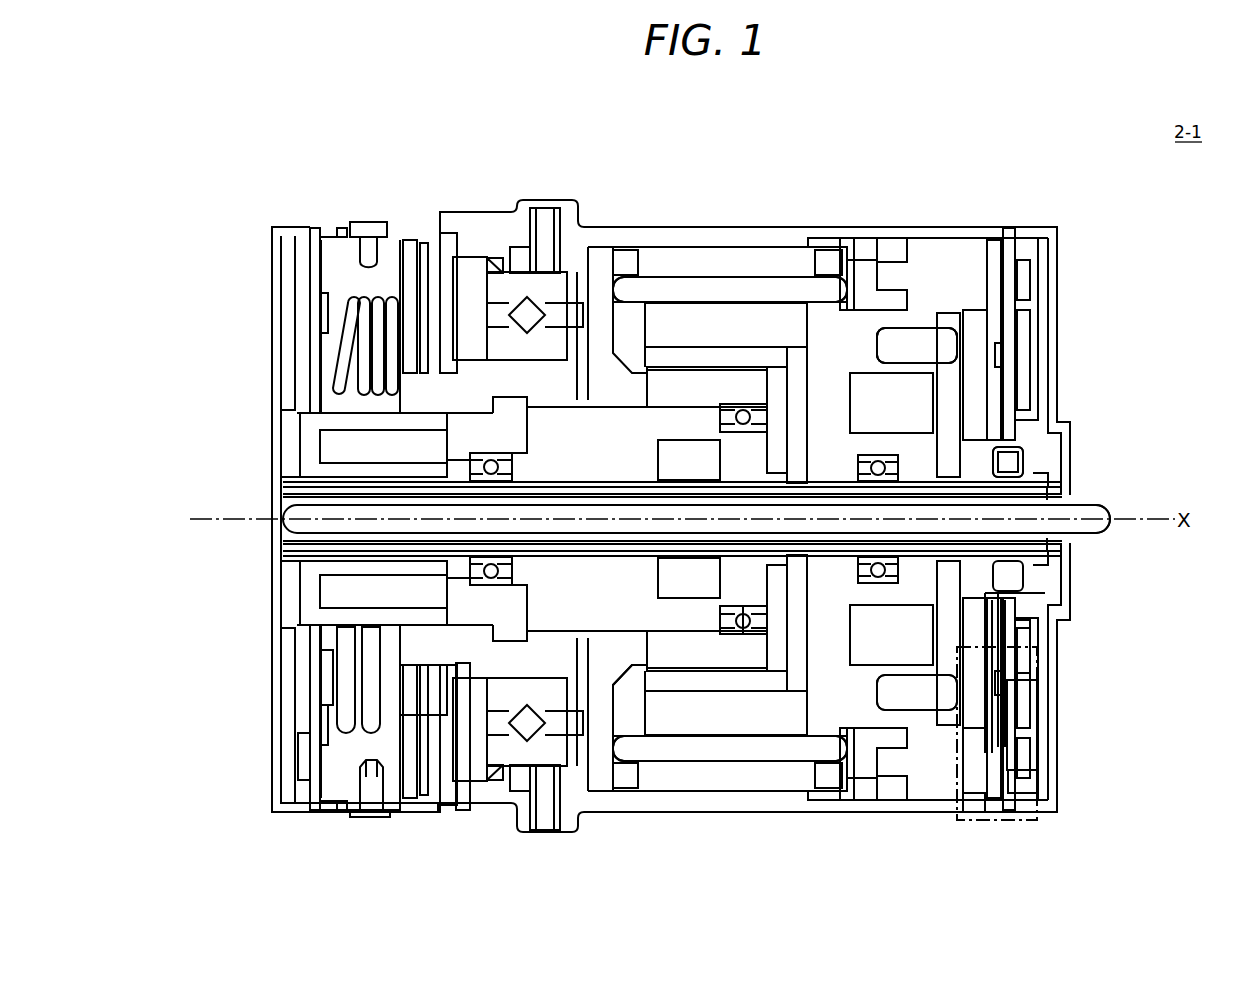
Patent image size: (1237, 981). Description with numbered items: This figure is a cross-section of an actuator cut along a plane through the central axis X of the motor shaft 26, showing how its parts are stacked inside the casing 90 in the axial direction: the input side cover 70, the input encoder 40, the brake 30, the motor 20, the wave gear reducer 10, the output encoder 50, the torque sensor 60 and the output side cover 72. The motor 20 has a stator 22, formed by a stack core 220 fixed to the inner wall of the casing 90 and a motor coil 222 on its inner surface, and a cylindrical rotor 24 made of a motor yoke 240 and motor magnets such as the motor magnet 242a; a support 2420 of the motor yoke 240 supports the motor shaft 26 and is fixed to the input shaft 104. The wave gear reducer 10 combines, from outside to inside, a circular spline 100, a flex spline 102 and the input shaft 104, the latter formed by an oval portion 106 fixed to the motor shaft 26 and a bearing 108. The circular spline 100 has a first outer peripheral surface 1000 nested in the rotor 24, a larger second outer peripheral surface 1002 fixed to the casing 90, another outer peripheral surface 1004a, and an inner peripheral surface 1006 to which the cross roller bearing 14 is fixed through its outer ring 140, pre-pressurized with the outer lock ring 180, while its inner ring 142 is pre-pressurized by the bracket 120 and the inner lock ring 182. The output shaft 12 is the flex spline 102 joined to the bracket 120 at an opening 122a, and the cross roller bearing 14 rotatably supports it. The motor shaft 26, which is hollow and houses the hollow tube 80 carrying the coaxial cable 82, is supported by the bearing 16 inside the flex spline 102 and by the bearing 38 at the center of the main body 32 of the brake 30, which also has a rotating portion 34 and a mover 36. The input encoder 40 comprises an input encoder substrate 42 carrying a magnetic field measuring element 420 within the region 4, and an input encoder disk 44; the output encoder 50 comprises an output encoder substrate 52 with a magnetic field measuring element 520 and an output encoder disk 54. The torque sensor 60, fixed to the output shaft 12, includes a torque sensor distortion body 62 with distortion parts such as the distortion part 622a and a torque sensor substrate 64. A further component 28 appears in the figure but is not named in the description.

The region 4 is at (1043, 727).
The wave gear reducer 10 is at (596, 236).
The output shaft 12 is at (387, 425).
The cross roller bearing 14 is at (497, 258).
The bearing 16 is at (305, 578).
The motor 20 is at (830, 146).
The stator 22 is at (772, 233).
The rotor 24 is at (793, 291).
The motor shaft 26 is at (1012, 470).
The rotor holder 28 is at (892, 778).
The brake 30 is at (845, 146).
The main body 32 is at (864, 298).
The rotating portion 34 is at (977, 295).
The mover 36 is at (945, 296).
The bearing 38 is at (965, 578).
The input encoder 40 is at (985, 158).
The input encoder substrate 42 is at (1018, 259).
The input encoder disk 44 is at (999, 259).
The output encoder 50 is at (477, 140).
The output encoder substrate 52 is at (408, 238).
The output encoder disk 54 is at (450, 230).
The torque sensor 60 is at (282, 148).
The torque sensor distortion body 62 is at (335, 218).
The torque sensor substrate 64 is at (314, 216).
The input side cover 70 is at (1074, 231).
The output side cover 72 is at (277, 214).
The hollow tube 80 is at (1040, 505).
The coaxial cable 82 is at (1100, 531).
The casing 90 is at (644, 242).
The circular spline 100 is at (738, 285).
The flex spline 102 is at (607, 760).
The input shaft 104 is at (760, 890).
The oval portion 106 is at (722, 650).
The bearing 108 is at (762, 680).
The bracket 120 is at (440, 386).
The opening 122a is at (420, 398).
The outer ring 140 is at (497, 288).
The inner ring 142 is at (497, 345).
The outer lock ring 180 is at (468, 775).
The inner lock ring 182 is at (405, 690).
The stack core 220 is at (690, 262).
The motor coil 222 is at (726, 262).
The motor yoke 240 is at (833, 700).
The motor magnet 242a is at (800, 770).
The magnetic field measuring element 420 is at (1027, 706).
The magnetic field measuring element 520 is at (395, 742).
The distortion part 622a is at (373, 720).
The first outer peripheral surface 1000 is at (787, 690).
The second outer peripheral surface 1002 is at (600, 790).
The outer peripheral surface 1004a is at (687, 600).
The inner peripheral surface 1006 is at (513, 800).
The support 2420 is at (940, 395).